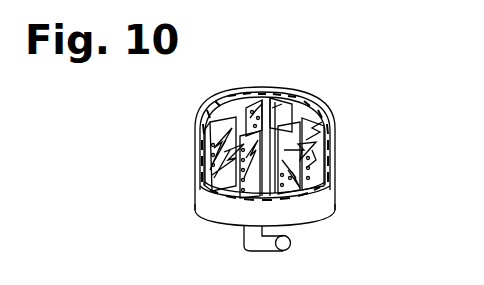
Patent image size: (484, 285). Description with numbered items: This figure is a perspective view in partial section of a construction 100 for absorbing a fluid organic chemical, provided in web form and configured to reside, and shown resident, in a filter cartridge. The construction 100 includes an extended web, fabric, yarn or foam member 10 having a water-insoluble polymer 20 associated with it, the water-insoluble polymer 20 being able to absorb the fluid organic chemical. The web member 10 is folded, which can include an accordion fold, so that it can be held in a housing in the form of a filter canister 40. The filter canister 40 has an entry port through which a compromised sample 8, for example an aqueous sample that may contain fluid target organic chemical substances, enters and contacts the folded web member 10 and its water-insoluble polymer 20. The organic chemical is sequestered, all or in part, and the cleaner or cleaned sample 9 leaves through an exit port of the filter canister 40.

The construction for absorbing a fluid organic chemical 100 is at (134, 95).
The compromised sample 8 is at (274, 70).
The cleaner or cleaned sample 9 is at (295, 243).
The extended web, fabric, yarn or foam member 10 is at (222, 188).
The water-insoluble polymer 20 is at (318, 127).
The filter canister 40 is at (305, 200).